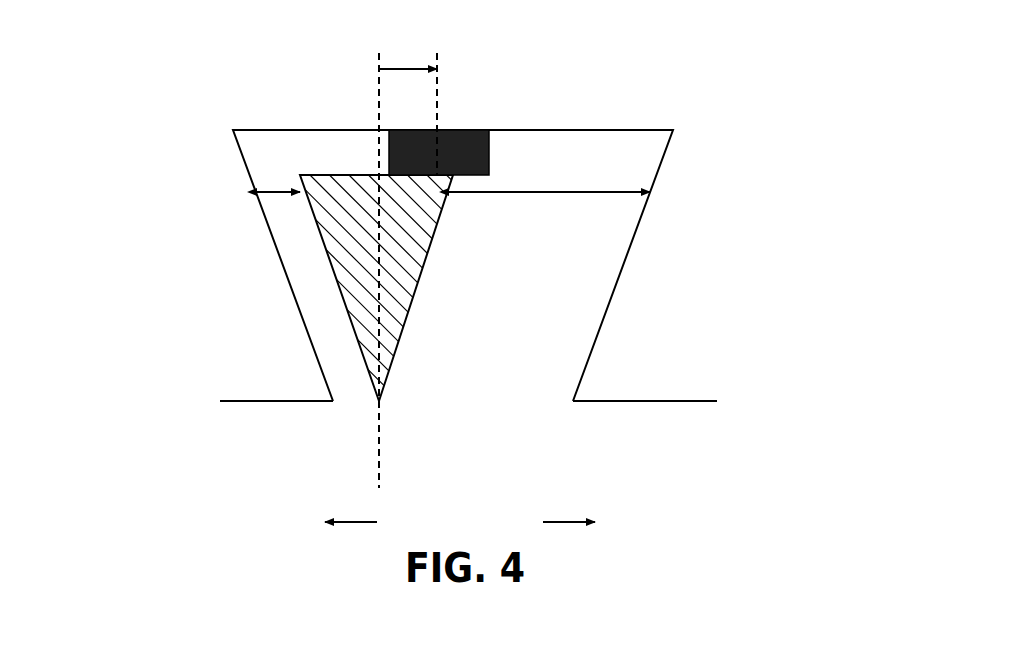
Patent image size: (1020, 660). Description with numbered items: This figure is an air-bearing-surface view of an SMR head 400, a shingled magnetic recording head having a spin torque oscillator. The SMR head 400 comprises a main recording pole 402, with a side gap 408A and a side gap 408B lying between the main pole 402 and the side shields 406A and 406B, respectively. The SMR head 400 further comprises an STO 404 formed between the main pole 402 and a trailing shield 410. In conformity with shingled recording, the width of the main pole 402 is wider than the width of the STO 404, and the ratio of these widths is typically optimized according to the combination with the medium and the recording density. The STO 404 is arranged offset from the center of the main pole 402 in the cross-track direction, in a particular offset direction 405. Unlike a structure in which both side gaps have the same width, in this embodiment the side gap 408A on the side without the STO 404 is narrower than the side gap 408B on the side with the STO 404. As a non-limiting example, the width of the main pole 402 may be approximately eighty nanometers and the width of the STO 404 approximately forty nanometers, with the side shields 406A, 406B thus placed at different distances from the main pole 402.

The SMR head 400 is at (145, 51).
The main pole 402 is at (403, 283).
The STO 404 is at (465, 138).
The offset direction 405 is at (407, 72).
The side shield 406A is at (303, 383).
The side shield 406B is at (623, 382).
The side gap 408A is at (282, 187).
The side gap 408B is at (575, 193).
The trailing shield 410 is at (560, 122).